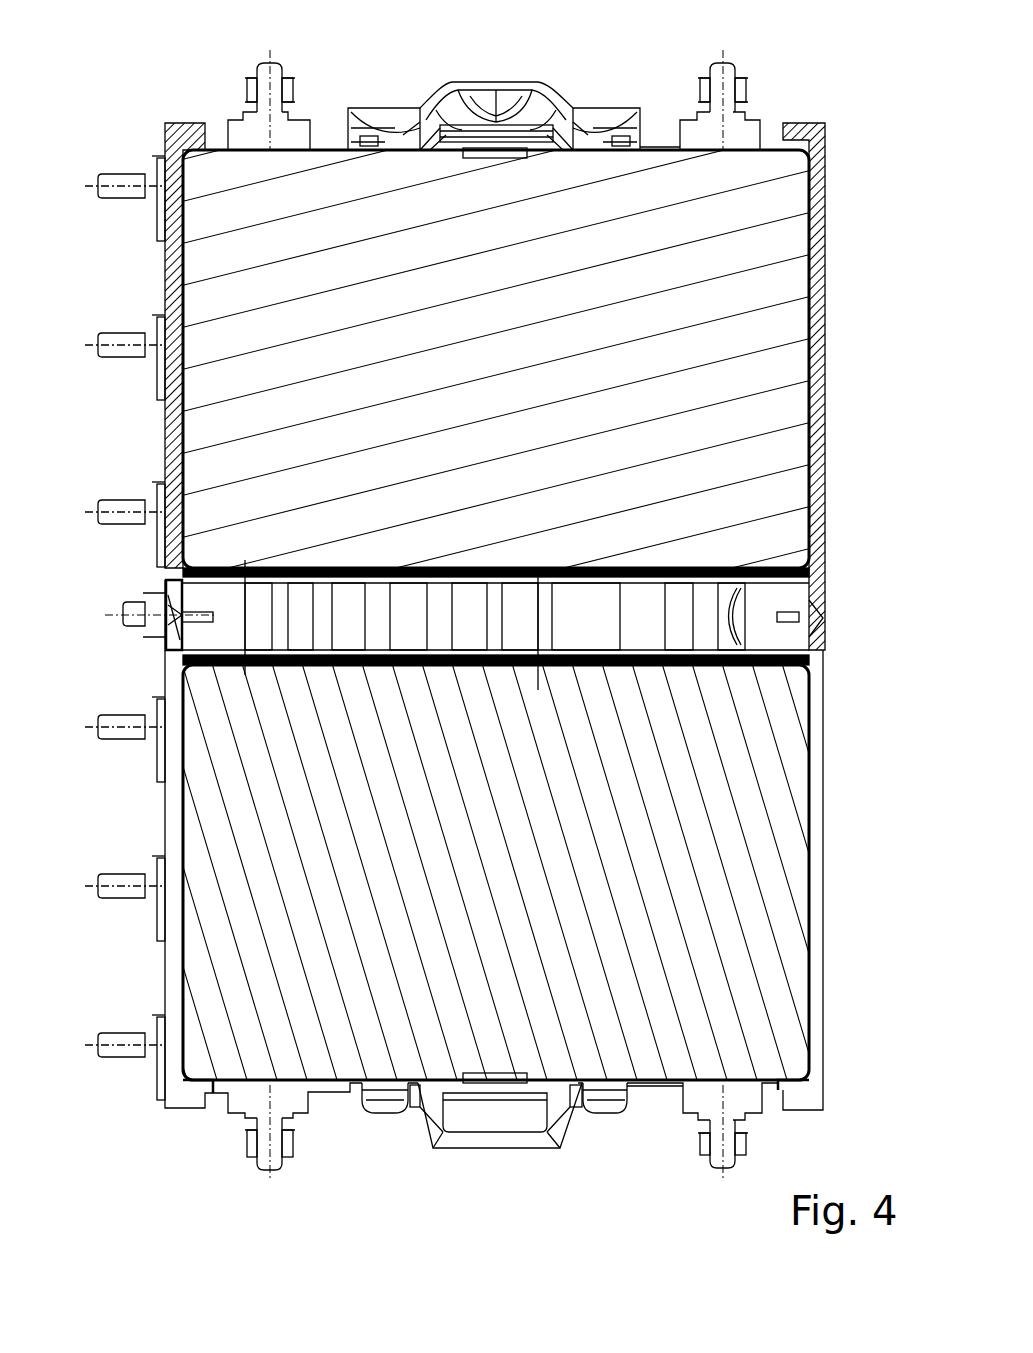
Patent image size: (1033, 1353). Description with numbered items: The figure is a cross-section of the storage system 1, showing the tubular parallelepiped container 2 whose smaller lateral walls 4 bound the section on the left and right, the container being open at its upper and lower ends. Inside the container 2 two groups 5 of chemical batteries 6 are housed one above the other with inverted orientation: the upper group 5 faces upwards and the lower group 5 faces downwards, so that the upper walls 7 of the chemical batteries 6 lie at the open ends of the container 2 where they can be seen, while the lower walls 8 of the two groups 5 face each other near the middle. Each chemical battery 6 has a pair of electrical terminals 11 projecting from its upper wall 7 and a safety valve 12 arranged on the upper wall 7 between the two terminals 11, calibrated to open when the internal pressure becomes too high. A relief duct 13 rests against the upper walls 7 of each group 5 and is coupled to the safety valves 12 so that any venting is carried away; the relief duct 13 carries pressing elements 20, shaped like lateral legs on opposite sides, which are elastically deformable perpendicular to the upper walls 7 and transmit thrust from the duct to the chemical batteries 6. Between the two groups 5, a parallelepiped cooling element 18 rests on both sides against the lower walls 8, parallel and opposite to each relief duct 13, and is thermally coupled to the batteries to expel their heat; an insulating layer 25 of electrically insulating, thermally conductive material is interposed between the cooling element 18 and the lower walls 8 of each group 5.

The storage system 1 is at (112, 1162).
The container 2 is at (826, 105).
The smaller lateral wall 4 is at (170, 410).
The group of chemical batteries 5 is at (323, 100).
The chemical battery 6 is at (780, 462).
The upper wall 7 is at (666, 145).
The lower wall 8 is at (812, 576).
The electrical terminal 11 is at (269, 62).
The safety valve 12 is at (500, 125).
The relief duct 13 is at (452, 95).
The cooling element 18 is at (740, 616).
The pressing element 20 is at (378, 80).
The insulating layer 25 is at (195, 660).